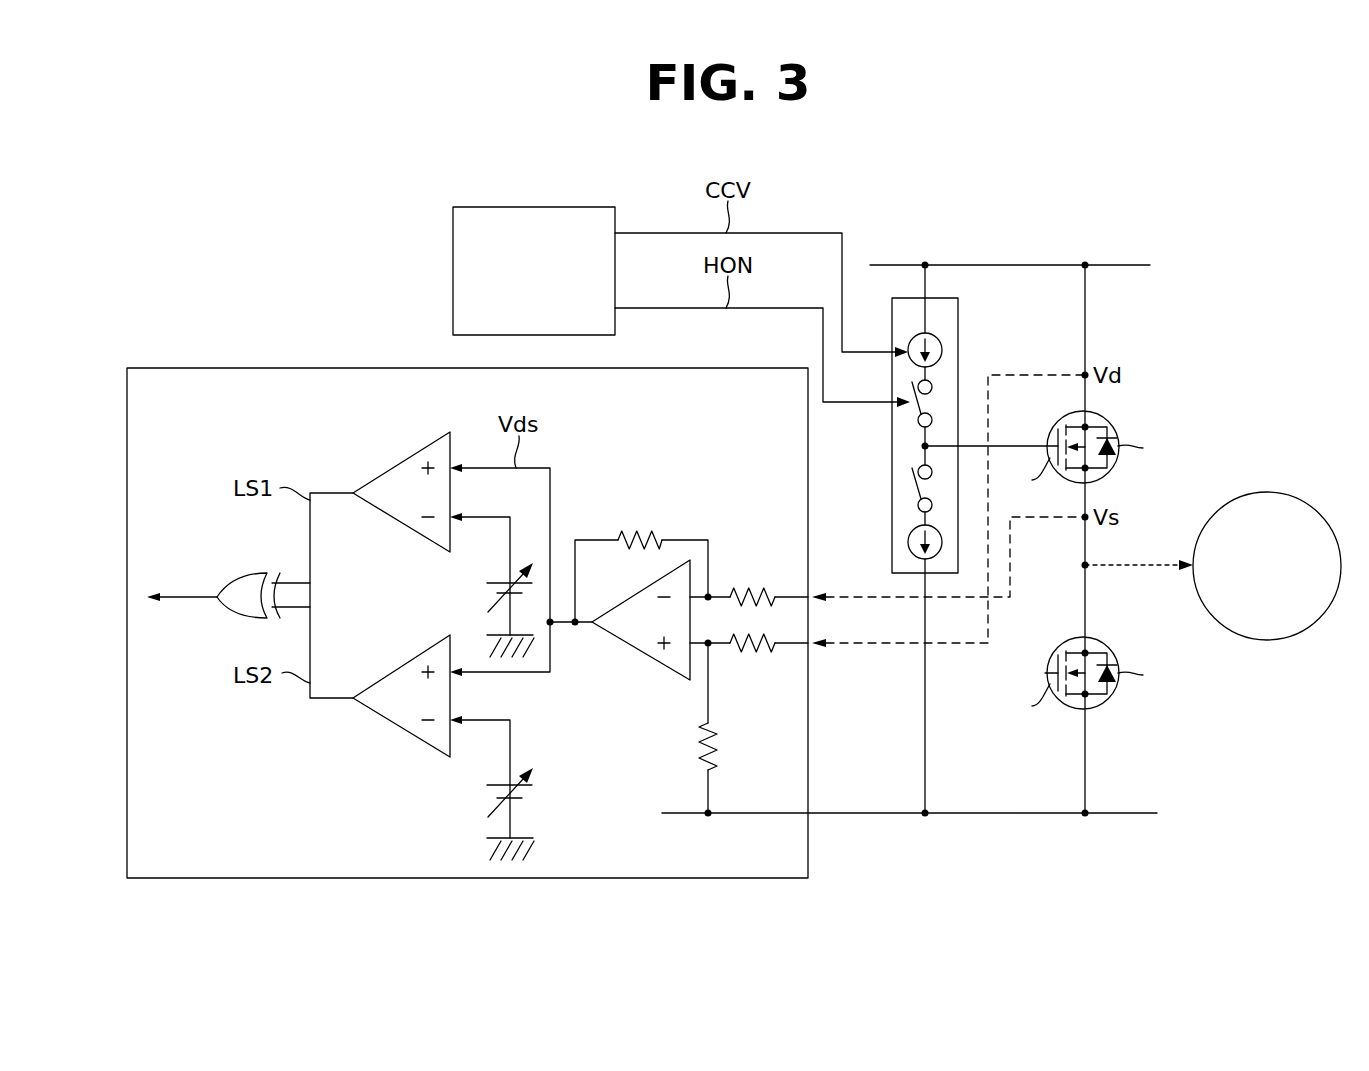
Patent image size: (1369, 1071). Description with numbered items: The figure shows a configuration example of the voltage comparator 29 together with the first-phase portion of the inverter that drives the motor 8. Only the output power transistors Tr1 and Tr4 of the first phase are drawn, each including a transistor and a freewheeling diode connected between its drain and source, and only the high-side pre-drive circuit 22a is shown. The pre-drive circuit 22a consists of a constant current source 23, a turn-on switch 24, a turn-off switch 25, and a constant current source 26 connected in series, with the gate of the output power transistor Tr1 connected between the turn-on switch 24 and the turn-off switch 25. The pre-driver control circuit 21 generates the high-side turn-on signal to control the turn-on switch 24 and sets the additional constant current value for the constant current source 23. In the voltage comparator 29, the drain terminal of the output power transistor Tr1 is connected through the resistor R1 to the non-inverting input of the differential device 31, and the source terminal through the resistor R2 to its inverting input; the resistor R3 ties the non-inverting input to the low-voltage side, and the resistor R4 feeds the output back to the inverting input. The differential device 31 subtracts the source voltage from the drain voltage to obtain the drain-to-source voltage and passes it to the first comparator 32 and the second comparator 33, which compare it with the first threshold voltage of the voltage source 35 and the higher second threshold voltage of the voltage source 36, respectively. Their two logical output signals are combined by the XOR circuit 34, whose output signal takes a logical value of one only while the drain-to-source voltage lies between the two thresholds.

The motor 8 is at (1265, 492).
The pre-driver control circuit 21 is at (453, 271).
The high-side pre-drive circuit 22a is at (892, 320).
The constant current source 23 is at (905, 345).
The turn-on switch 24 is at (905, 389).
The turn-off switch 25 is at (912, 493).
The constant current source 26 is at (908, 544).
The voltage comparator 29 is at (347, 368).
The differential device 31 is at (640, 650).
The first comparator 32 is at (403, 460).
The second comparator 33 is at (403, 665).
The XOR circuit 34 is at (238, 574).
The voltage source 35 is at (495, 592).
The voltage source 36 is at (523, 797).
The resistor R1 is at (751, 647).
The resistor R2 is at (758, 590).
The resistor R3 is at (717, 762).
The resistor R4 is at (648, 536).
The output power transistor Tr1 is at (1118, 430).
The output power transistor Tr4 is at (1118, 656).